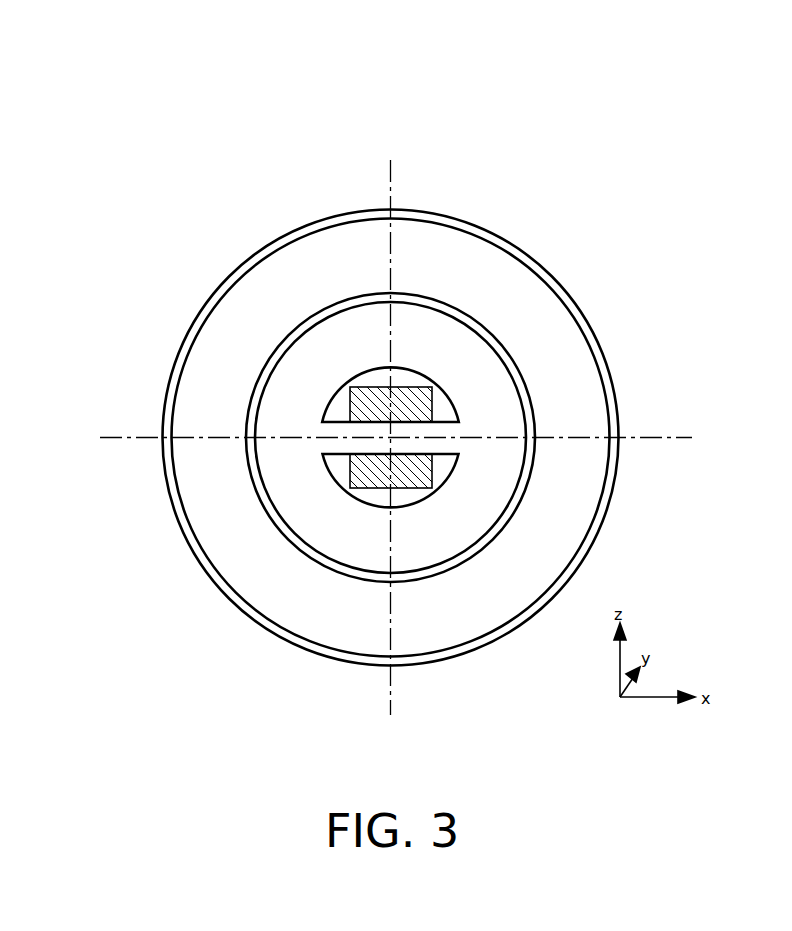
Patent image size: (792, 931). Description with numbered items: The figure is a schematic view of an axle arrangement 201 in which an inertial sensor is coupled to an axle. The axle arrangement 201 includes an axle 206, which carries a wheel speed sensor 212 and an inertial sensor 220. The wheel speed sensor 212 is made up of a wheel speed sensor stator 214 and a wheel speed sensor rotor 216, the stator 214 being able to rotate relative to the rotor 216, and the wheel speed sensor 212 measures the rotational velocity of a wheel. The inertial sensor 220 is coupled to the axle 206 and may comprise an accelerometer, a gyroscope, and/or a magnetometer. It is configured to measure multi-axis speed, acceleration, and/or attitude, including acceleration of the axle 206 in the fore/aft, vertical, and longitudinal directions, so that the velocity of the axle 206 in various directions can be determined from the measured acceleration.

The axle arrangement 201 is at (396, 385).
The axle 206 is at (306, 228).
The wheel speed sensor 212 is at (469, 222).
The wheel speed sensor stator 214 is at (275, 298).
The wheel speed sensor rotor 216 is at (317, 373).
The inertial sensor 220 is at (420, 410).